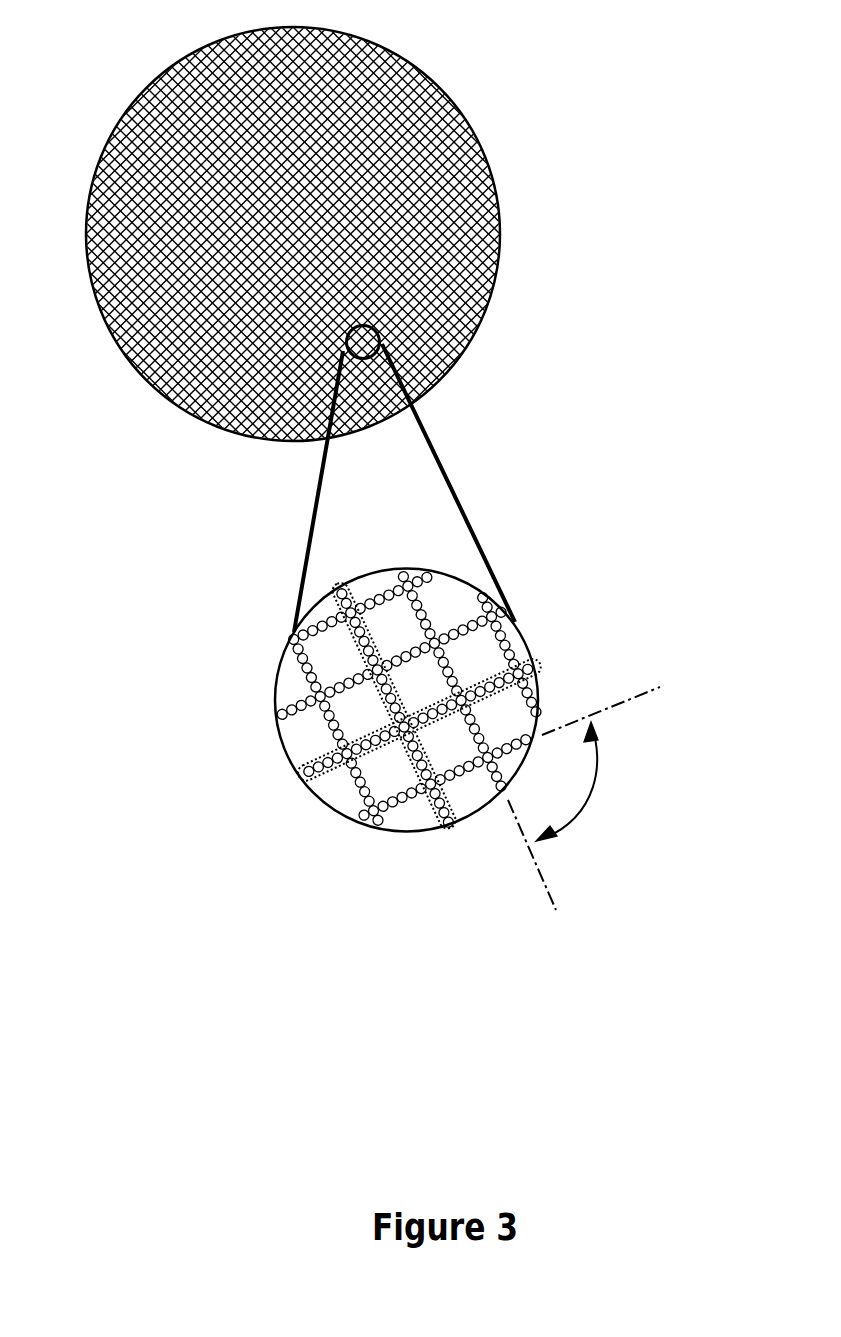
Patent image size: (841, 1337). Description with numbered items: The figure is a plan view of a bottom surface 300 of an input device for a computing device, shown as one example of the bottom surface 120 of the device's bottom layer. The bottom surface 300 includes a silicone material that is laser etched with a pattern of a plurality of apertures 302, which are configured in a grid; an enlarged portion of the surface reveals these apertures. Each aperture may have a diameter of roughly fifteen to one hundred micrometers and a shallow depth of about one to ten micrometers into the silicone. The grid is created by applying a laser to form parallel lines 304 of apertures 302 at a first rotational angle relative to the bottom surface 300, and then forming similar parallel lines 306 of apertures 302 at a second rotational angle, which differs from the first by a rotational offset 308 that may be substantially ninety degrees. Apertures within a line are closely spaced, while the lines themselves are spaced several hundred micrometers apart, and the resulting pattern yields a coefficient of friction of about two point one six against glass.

The bottom surface 120 is at (175, 64).
The bottom surface 300 is at (370, 170).
The apertures 302 is at (300, 700).
The parallel lines of apertures 304 is at (313, 760).
The parallel lines of apertures 306 is at (337, 584).
The rotational offset 308 is at (596, 796).